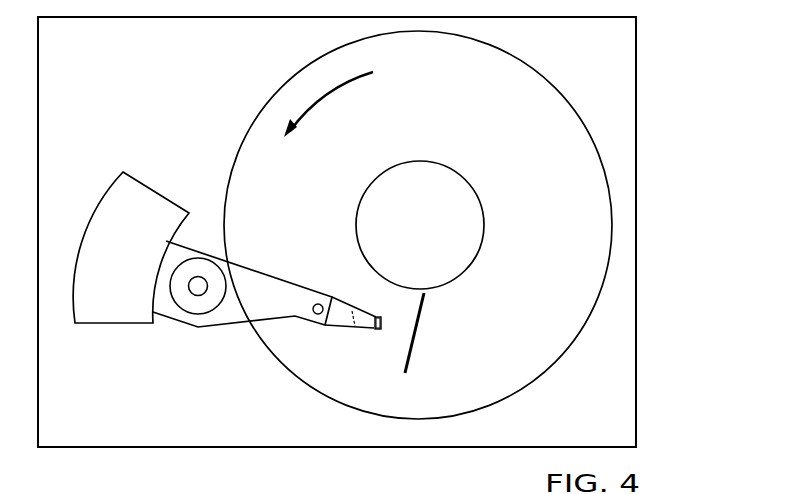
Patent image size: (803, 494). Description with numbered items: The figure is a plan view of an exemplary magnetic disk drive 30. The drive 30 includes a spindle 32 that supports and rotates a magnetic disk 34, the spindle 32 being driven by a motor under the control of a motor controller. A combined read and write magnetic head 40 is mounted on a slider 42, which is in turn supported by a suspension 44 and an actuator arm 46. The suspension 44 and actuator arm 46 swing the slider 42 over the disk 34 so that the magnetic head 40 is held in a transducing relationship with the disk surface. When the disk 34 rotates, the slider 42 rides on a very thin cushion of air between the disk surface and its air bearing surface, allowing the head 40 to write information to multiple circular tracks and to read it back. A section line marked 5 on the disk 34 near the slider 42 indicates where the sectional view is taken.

The magnetic disk drive 30 is at (655, 51).
The spindle 32 is at (457, 170).
The magnetic disk 34 is at (560, 245).
The magnetic head 40 is at (381, 329).
The slider 42 is at (379, 318).
The suspension 44 is at (336, 326).
The actuator arm 46 is at (255, 265).
The section line 5- 5 is at (430, 300).